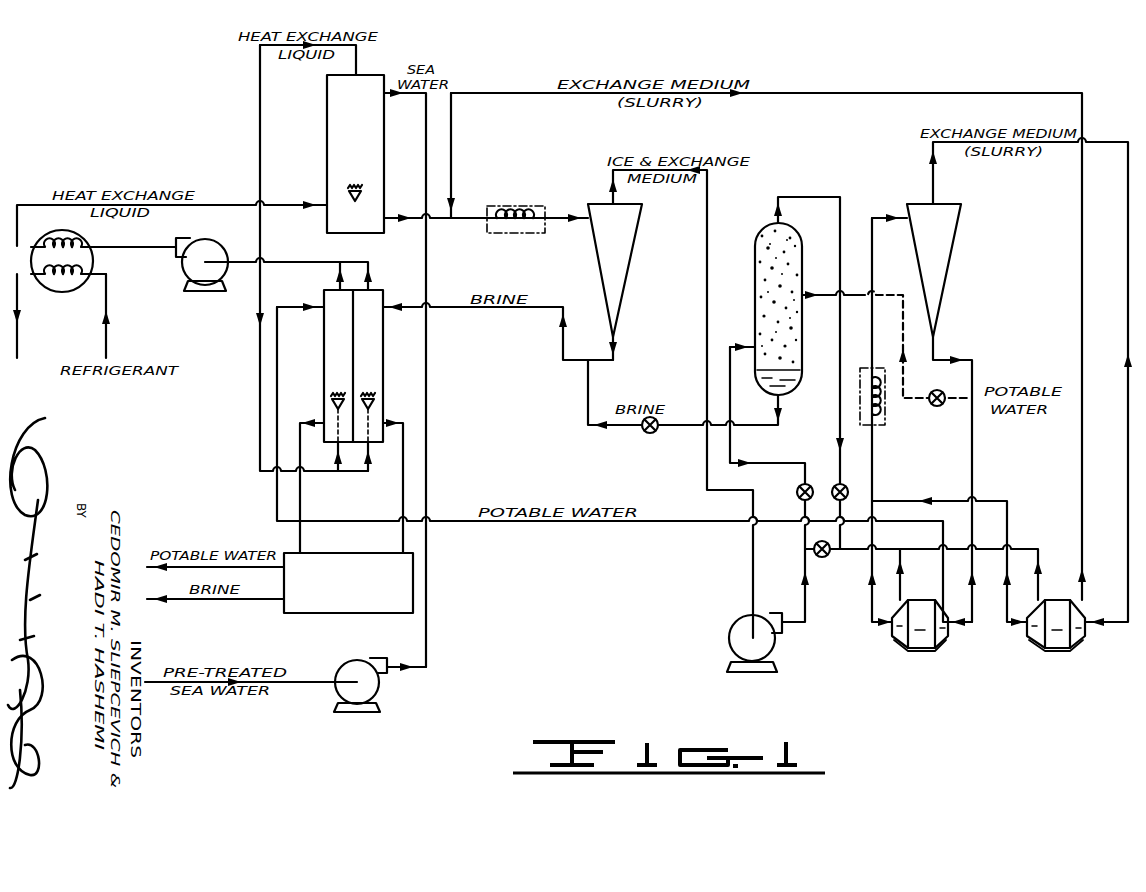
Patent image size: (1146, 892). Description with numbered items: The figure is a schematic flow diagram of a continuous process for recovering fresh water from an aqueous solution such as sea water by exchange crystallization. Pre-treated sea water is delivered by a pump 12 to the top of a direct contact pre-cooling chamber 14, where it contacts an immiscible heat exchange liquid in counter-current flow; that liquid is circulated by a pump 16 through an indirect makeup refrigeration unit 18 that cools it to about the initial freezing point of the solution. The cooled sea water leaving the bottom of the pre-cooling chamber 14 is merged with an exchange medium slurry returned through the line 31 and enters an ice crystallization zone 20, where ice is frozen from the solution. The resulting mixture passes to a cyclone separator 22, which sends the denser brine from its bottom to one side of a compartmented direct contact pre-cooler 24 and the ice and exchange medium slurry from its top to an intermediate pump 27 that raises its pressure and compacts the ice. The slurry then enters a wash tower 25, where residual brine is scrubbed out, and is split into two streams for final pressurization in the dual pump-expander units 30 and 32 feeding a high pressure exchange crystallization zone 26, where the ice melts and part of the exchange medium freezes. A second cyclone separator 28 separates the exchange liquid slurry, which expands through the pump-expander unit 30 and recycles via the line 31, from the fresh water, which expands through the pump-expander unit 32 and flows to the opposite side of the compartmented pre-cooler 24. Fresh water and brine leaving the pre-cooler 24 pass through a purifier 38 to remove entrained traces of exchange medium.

The pump 12 is at (372, 689).
The direct contact pre-cooling chamber 14 is at (360, 151).
The pump 16 is at (190, 268).
The indirect makeup refrigeration unit 18 is at (86, 261).
The ice crystallization zone 20 is at (491, 229).
The cyclone separator 22 is at (623, 236).
The compartmented direct contact pre-cooler 24 is at (371, 354).
The wash tower 25 is at (797, 241).
The high pressure exchange crystallization zone 26 is at (888, 421).
The intermediate pump 27 is at (735, 646).
The cyclone separator 28 is at (943, 240).
The pump-expander unit 30 is at (1066, 620).
The line 31 is at (905, 92).
The pump-expander unit 32 is at (929, 620).
The purifier 38 is at (359, 592).